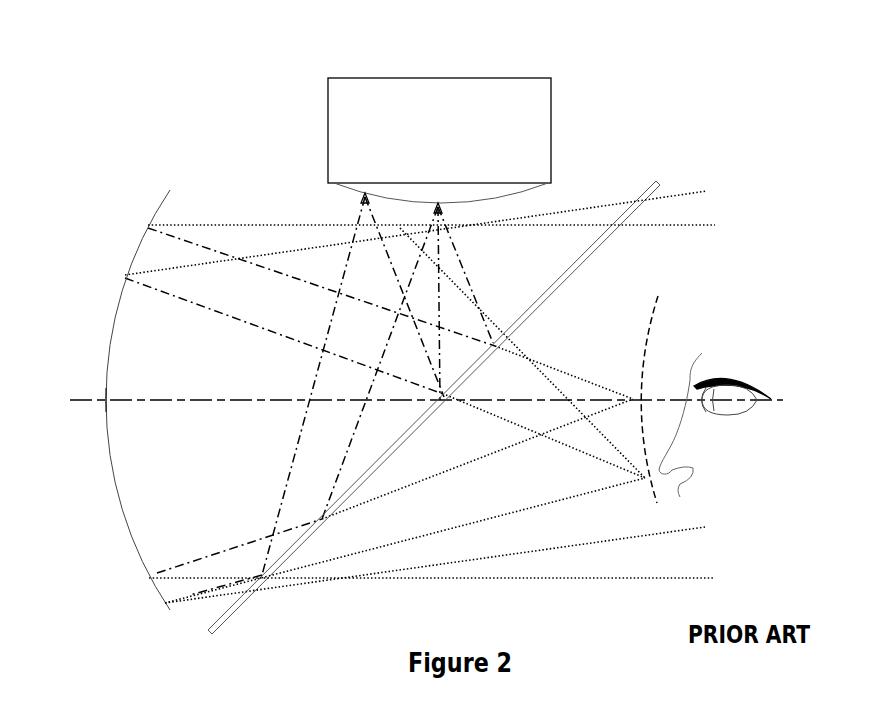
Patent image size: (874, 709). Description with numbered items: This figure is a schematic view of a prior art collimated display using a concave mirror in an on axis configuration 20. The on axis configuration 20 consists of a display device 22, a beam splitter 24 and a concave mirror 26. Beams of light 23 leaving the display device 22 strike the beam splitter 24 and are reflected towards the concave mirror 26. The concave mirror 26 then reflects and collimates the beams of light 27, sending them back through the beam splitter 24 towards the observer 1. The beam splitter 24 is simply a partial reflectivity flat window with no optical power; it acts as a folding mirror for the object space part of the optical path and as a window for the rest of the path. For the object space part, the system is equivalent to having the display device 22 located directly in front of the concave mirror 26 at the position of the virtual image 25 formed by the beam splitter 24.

The observer 1 is at (739, 372).
The on axis configuration 20 is at (612, 101).
The display device 22 is at (328, 88).
The beams of light 23 is at (354, 212).
The beam splitter 24 is at (613, 233).
The virtual image 25 is at (640, 352).
The concave mirror 26 is at (135, 250).
The collimated beams of light 27 is at (695, 194).